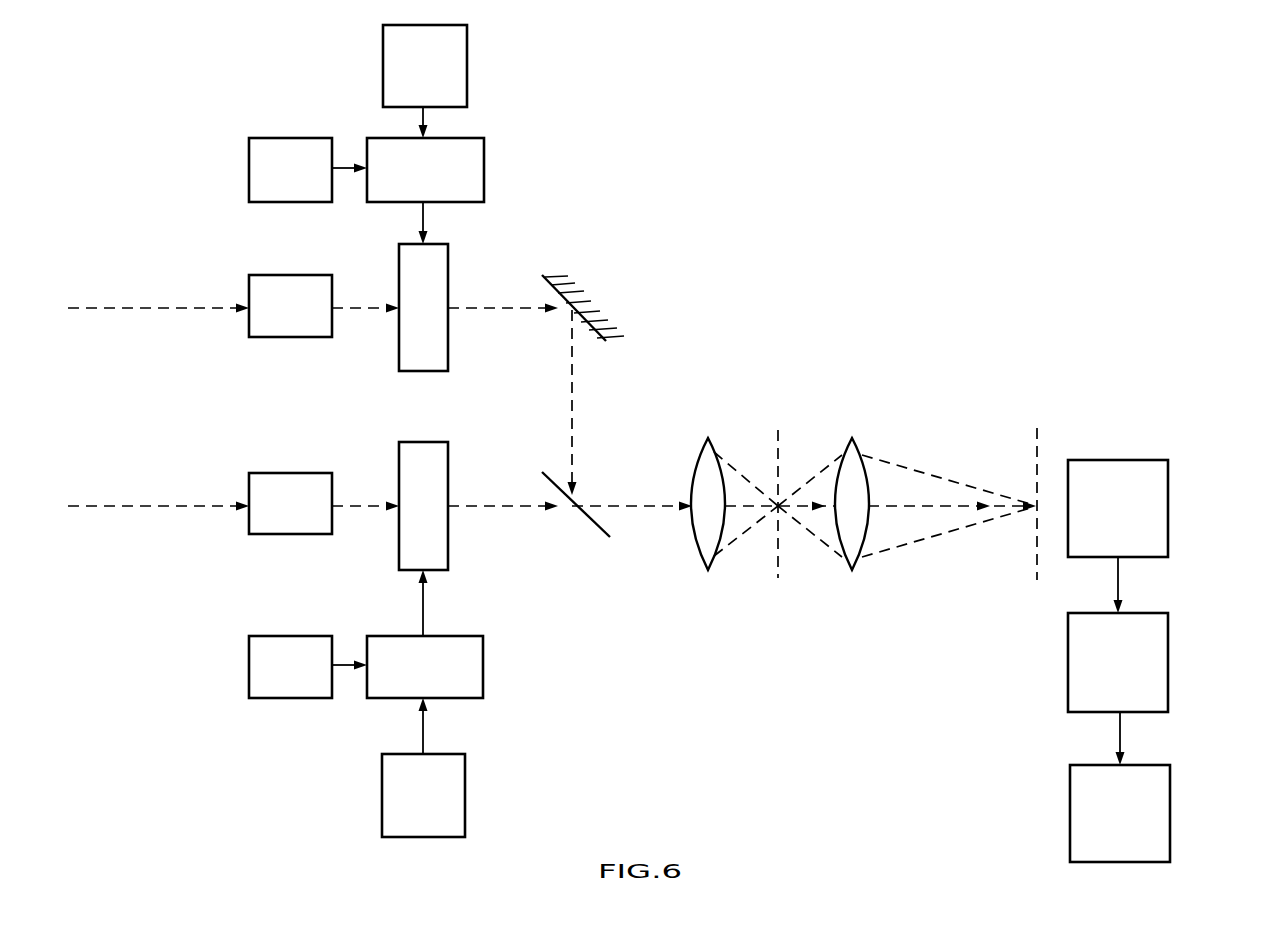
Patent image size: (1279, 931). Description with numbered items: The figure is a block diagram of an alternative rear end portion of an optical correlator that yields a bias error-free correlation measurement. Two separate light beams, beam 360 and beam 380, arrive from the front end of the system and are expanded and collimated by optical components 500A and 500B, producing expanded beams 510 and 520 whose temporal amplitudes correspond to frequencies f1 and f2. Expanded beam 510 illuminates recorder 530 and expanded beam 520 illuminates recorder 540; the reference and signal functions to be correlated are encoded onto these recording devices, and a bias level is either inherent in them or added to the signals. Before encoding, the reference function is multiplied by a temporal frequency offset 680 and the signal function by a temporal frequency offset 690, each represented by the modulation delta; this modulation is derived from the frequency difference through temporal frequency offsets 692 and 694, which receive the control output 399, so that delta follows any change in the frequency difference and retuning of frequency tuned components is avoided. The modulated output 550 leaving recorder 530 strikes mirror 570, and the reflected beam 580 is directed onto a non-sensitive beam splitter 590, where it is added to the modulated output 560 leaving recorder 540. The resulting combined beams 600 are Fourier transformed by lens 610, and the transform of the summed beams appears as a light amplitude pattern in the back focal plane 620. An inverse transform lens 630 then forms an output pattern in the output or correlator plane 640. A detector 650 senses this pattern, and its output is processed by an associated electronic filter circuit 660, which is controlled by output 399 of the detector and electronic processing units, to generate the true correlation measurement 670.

The output of detector and associated electronic processing units 399 is at (371, 68).
The temporal frequency offset 692 is at (462, 42).
The temporal frequency offset 680 is at (484, 165).
The recorder 530 is at (432, 257).
The optical component 500A is at (302, 284).
The beam 360 is at (90, 308).
The expanded beam 510 is at (365, 311).
The modulated output 550 is at (490, 308).
The mirror 570 is at (595, 310).
The reflected beam 580 is at (573, 366).
The recorder 540 is at (413, 452).
The optical component 500B is at (323, 483).
The beam 380 is at (75, 506).
The expanded beam 520 is at (365, 508).
The modulated output 560 is at (487, 508).
The non-sensitive beam splitter 590 is at (598, 523).
The combined beams 600 is at (668, 503).
The lens 610 is at (709, 567).
The back focal plane 620 is at (780, 436).
The inverse transform lens 630 is at (858, 562).
The output or correlator plane 640 is at (1035, 434).
The detector 650 is at (1243, 400).
The electronic filter circuit 660 is at (1078, 695).
The correlation measurement 670 is at (1078, 783).
The temporal frequency offset 690 is at (476, 695).
The temporal frequency offset 694 is at (465, 771).